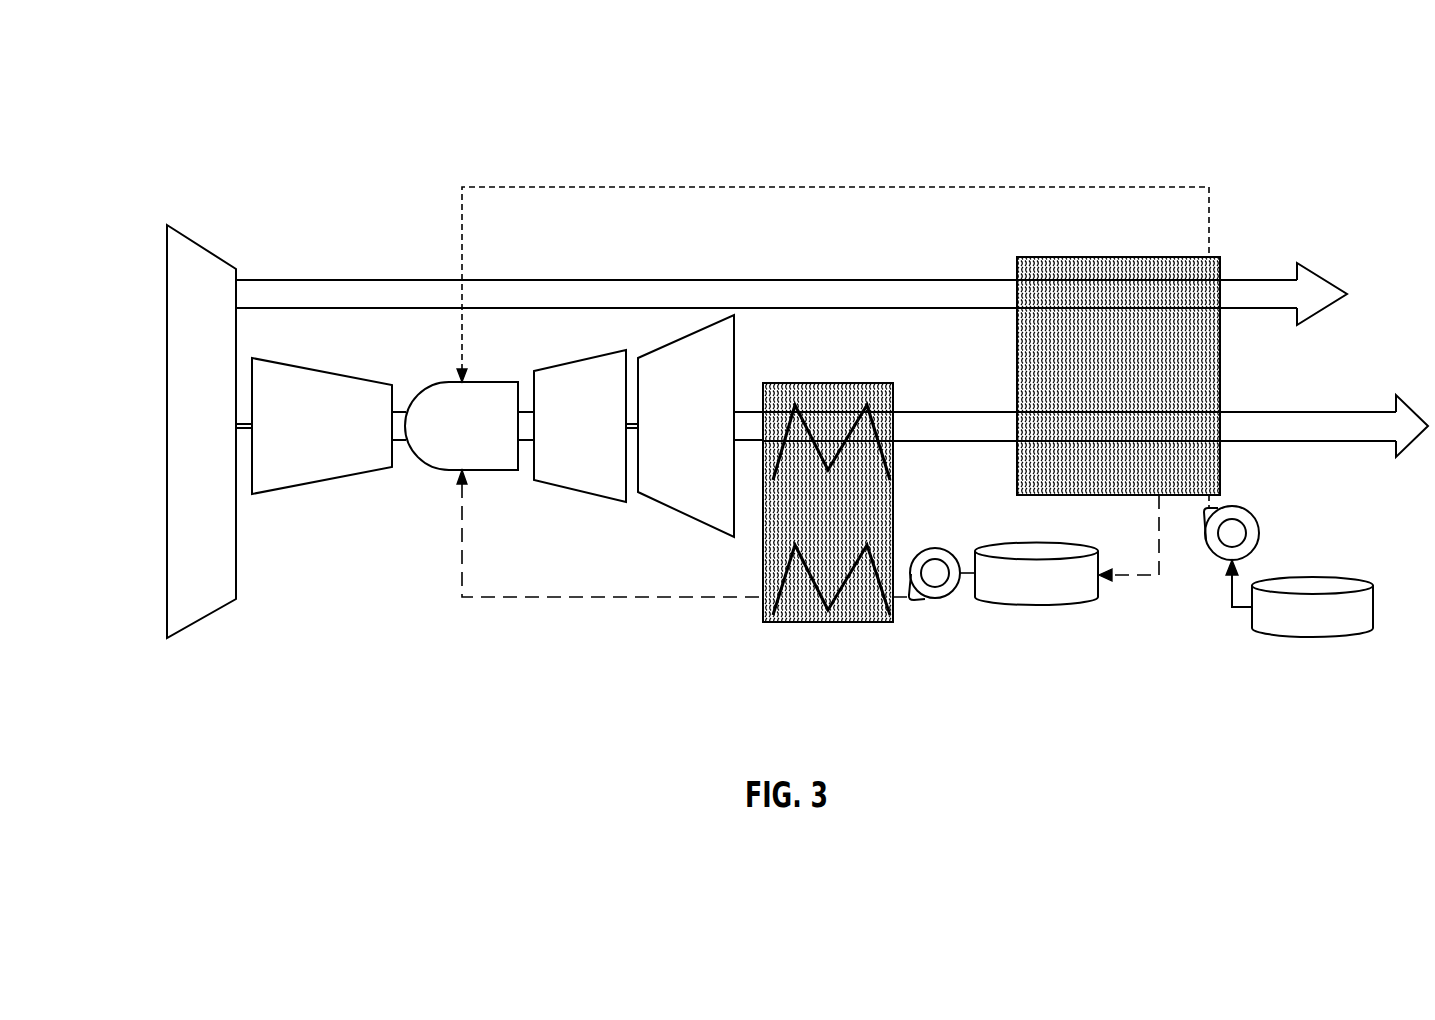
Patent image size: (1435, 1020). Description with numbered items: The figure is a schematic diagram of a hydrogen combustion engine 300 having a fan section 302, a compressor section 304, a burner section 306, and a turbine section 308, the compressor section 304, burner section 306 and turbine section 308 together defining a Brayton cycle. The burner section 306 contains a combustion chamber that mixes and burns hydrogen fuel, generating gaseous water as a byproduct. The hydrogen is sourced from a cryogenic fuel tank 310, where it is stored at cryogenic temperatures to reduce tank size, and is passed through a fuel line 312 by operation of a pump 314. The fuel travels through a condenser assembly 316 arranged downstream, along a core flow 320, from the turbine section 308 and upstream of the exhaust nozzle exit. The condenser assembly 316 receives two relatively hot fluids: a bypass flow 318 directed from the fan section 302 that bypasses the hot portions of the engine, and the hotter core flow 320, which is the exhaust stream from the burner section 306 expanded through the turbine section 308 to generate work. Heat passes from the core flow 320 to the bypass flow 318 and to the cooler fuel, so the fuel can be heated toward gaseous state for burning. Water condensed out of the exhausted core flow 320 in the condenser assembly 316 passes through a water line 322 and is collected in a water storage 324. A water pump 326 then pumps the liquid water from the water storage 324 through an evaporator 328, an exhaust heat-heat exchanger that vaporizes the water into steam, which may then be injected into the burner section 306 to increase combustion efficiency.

The hydrogen combustion engine 300 is at (185, 89).
The fan section 302 is at (226, 232).
The compressor section 304 is at (346, 355).
The burner section 306 is at (428, 490).
The turbine section 308 is at (562, 515).
The cryogenic fuel tank 310 is at (1314, 638).
The fuel line 312 is at (836, 187).
The pump 314 is at (1260, 533).
The condenser assembly 316 is at (1072, 280).
The bypass flow 318 is at (766, 280).
The core flow 320 is at (956, 412).
The water line 322 is at (605, 598).
The water storage 324 is at (1035, 605).
The water pump 326 is at (930, 606).
The evaporator 328 is at (843, 623).